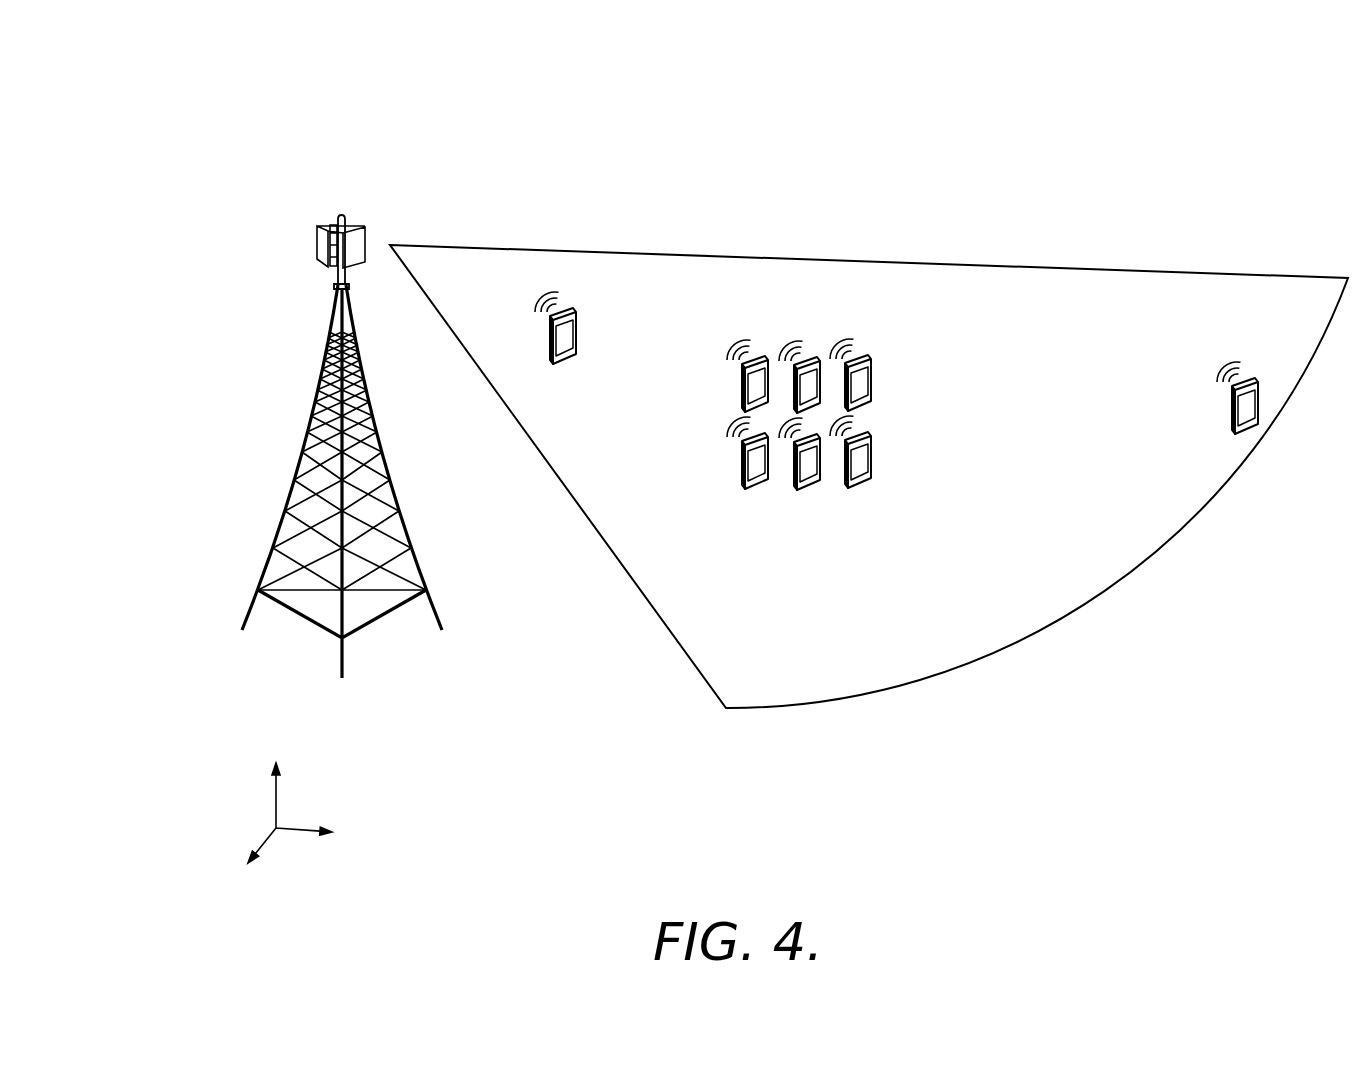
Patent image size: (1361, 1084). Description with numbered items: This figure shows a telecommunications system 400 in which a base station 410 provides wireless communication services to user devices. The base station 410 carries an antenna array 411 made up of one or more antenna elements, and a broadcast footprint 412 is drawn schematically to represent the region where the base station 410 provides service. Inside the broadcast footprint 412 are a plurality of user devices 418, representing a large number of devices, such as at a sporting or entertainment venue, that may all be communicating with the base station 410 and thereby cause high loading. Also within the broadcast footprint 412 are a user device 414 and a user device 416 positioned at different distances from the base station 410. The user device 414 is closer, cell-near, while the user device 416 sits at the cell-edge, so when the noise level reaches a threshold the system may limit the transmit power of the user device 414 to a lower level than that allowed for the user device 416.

The system 400 is at (167, 117).
The base station 410 is at (245, 357).
The antenna array 411 is at (312, 243).
The broadcast footprint 412 is at (1025, 265).
The user device 414 is at (579, 333).
The user device 416 is at (1215, 405).
The plurality of user devices 418 is at (903, 389).